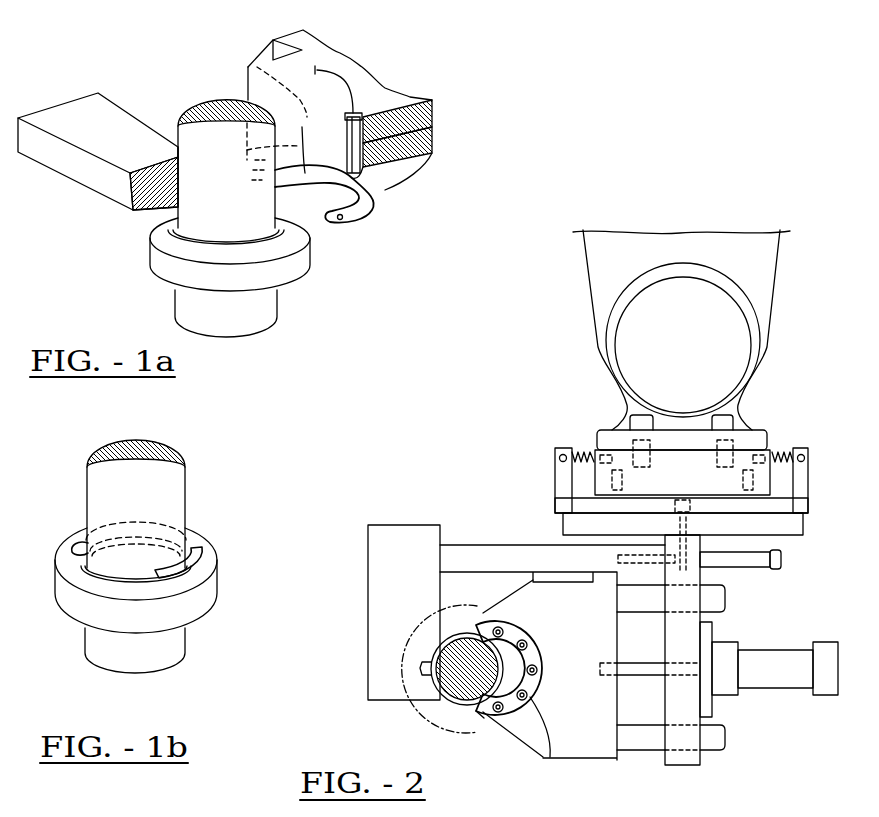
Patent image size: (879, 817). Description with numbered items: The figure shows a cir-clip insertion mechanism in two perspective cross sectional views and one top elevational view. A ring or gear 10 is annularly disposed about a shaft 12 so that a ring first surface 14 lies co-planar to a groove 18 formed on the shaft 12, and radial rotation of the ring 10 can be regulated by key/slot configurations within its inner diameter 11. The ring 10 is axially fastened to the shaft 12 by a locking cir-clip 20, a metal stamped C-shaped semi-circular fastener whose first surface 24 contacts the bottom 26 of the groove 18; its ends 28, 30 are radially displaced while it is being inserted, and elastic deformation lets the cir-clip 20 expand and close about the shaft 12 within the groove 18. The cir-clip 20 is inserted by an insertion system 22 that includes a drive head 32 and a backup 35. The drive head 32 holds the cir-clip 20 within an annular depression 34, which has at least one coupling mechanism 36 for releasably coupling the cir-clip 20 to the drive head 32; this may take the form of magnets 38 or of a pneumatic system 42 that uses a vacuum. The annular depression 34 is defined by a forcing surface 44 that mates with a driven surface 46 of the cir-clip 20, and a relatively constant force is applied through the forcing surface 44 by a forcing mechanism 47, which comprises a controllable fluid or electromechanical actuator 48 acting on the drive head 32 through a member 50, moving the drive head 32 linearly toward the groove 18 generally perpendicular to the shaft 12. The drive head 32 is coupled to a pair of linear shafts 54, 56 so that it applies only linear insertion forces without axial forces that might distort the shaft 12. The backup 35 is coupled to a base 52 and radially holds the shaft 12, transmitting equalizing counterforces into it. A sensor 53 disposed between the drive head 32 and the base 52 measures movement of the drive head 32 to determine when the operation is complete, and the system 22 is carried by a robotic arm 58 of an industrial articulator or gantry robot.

In FIG. 1A, the ring 10 is at (277, 275).
In FIG. 1B, the ring 10 is at (218, 582).
In FIG. 2, the ring 10 is at (440, 722).
In FIG. 1A, the inner diameter 11 is at (238, 242).
In FIG. 1B, the inner diameter 11 is at (143, 582).
In FIG. 1A, the shaft 12 is at (260, 320).
In FIG. 1B, the shaft 12 is at (182, 488).
In FIG. 2, the shaft 12 is at (440, 643).
In FIG. 1A, the ring first surface 14 is at (294, 228).
In FIG. 1B, the ring first surface 14 is at (215, 552).
In FIG. 1A, the groove 18 is at (150, 228).
In FIG. 1B, the groove 18 is at (83, 570).
In FIG. 2, the groove 18 is at (437, 628).
In FIG. 1A, the locking cir-clip 20 is at (375, 207).
In FIG. 1B, the locking cir-clip 20 is at (200, 540).
In FIG. 2, the locking cir-clip 20 is at (477, 627).
In FIG. 2, the insertion system 22 is at (628, 466).
In FIG. 1A, the first surface 24 is at (305, 173).
In FIG. 1A, the bottom 26 is at (165, 262).
In FIG. 1B, the bottom 26 is at (73, 598).
In FIG. 2, the bottom 26 is at (462, 700).
In FIG. 1A, the end 28 is at (351, 224).
In FIG. 1B, the end 28 is at (197, 580).
In FIG. 2, the end 28 is at (478, 714).
In FIG. 1B, the end 30 is at (75, 543).
In FIG. 1A, the drive head 32 is at (373, 92).
In FIG. 2, the drive head 32 is at (617, 758).
In FIG. 1A, the annular depression 34 is at (400, 180).
In FIG. 1A, the backup 35 is at (97, 178).
In FIG. 2, the backup 35 is at (373, 663).
In FIG. 1A, the coupling mechanism 36 is at (434, 118).
In FIG. 1A, the magnets 38 is at (263, 67).
In FIG. 1A, the pneumatic system 42 is at (342, 65).
In FIG. 1A, the forcing surface 44 is at (434, 152).
In FIG. 2, the forcing surface 44 is at (527, 627).
In FIG. 1A, the driven surface 46 is at (373, 189).
In FIG. 1B, the driven surface 46 is at (203, 590).
In FIG. 2, the driven surface 46 is at (530, 712).
In FIG. 2, the forcing mechanism 47 is at (790, 606).
In FIG. 2, the actuator 48 is at (778, 662).
In FIG. 2, the member 50 is at (648, 677).
In FIG. 2, the base 52 is at (683, 641).
In FIG. 2, the sensor 53 is at (783, 557).
In FIG. 2, the linear shaft 54 is at (716, 600).
In FIG. 2, the linear shaft 56 is at (716, 740).
In FIG. 2, the robotic arm 58 is at (767, 280).